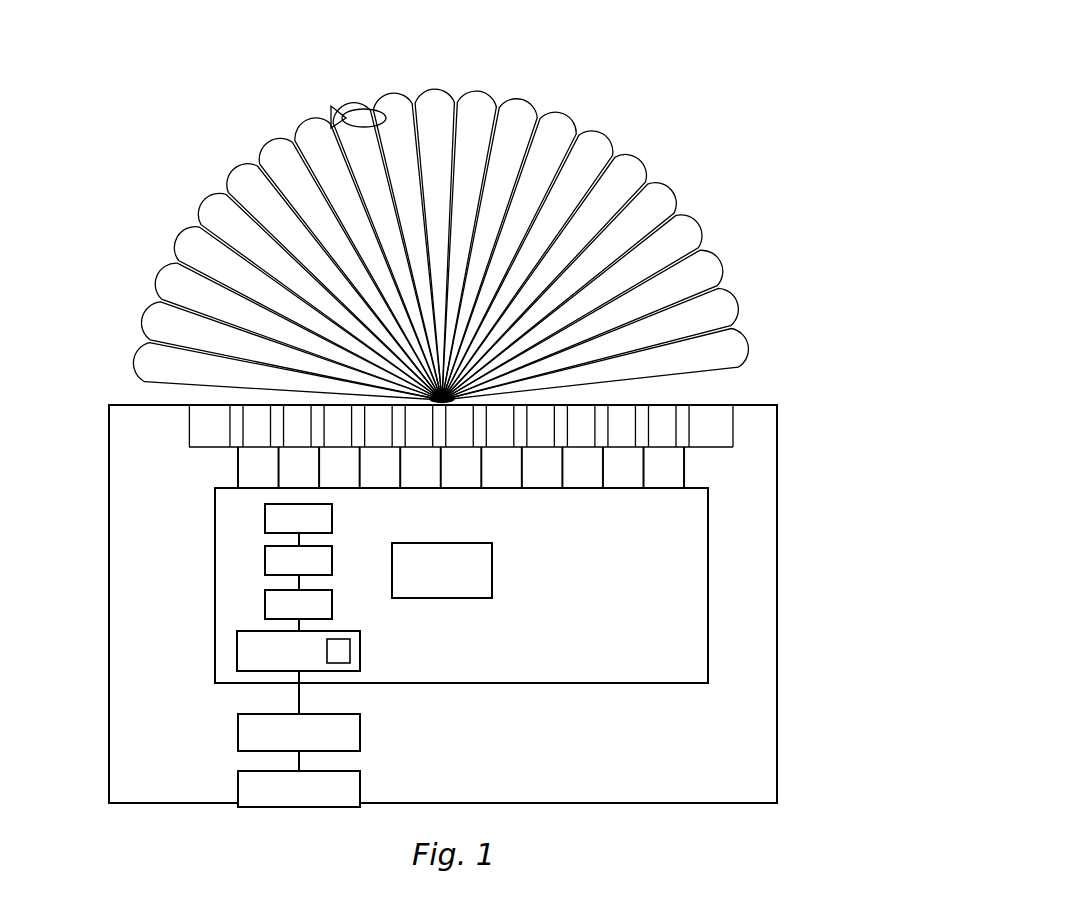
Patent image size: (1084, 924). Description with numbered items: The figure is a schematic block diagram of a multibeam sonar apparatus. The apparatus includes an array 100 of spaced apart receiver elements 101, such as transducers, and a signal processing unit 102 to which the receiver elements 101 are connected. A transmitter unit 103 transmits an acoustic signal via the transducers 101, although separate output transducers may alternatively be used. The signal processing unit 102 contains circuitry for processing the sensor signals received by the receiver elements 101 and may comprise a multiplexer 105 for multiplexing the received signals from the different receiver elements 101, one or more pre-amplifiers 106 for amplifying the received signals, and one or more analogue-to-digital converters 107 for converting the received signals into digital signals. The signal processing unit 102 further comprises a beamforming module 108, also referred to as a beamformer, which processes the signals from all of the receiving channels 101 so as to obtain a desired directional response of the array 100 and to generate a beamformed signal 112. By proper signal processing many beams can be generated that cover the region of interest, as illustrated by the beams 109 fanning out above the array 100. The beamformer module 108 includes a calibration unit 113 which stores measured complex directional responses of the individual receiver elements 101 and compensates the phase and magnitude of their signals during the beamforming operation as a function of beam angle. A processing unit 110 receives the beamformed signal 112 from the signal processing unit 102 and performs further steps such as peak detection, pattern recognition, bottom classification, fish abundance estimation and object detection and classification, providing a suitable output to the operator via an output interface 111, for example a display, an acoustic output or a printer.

The array 100 is at (486, 571).
The receiver elements 101 is at (403, 433).
The signal processing unit 102 is at (461, 605).
The transmitter unit 103 is at (423, 585).
The multiplexer 105 is at (280, 529).
The pre-amplifier 106 is at (280, 571).
The analogue-to-digital converter 107 is at (280, 615).
The beamforming module 108 is at (280, 665).
The beams 109 is at (441, 221).
The processing unit 110 is at (280, 745).
The output interface 111 is at (280, 801).
The beamformed signal 112 is at (218, 696).
The calibration unit 113 is at (400, 638).